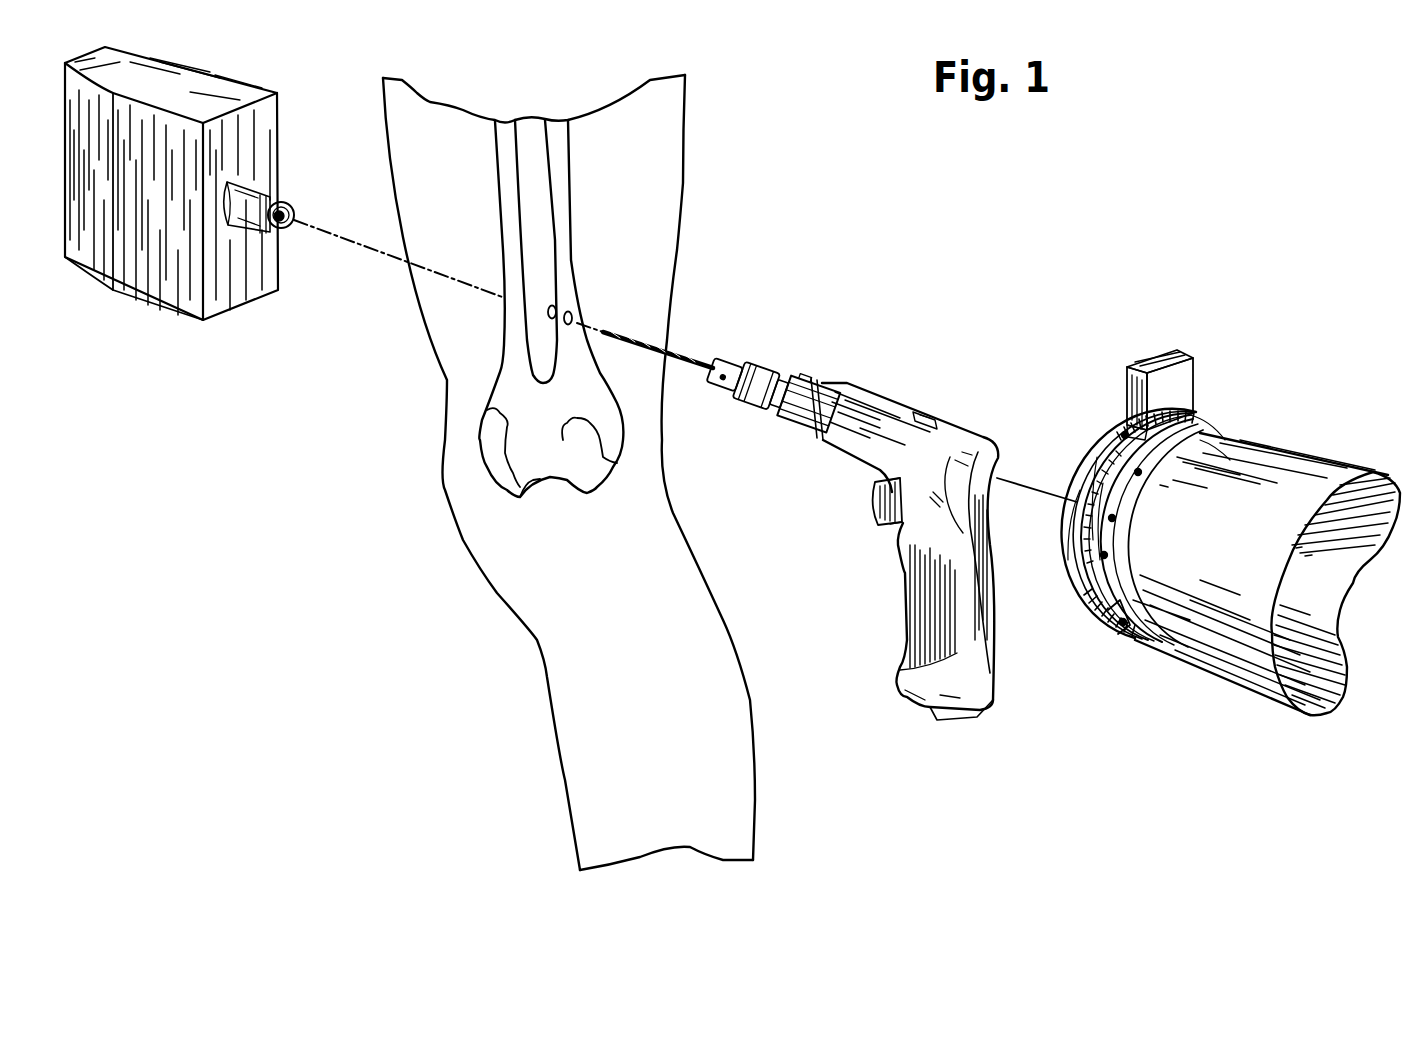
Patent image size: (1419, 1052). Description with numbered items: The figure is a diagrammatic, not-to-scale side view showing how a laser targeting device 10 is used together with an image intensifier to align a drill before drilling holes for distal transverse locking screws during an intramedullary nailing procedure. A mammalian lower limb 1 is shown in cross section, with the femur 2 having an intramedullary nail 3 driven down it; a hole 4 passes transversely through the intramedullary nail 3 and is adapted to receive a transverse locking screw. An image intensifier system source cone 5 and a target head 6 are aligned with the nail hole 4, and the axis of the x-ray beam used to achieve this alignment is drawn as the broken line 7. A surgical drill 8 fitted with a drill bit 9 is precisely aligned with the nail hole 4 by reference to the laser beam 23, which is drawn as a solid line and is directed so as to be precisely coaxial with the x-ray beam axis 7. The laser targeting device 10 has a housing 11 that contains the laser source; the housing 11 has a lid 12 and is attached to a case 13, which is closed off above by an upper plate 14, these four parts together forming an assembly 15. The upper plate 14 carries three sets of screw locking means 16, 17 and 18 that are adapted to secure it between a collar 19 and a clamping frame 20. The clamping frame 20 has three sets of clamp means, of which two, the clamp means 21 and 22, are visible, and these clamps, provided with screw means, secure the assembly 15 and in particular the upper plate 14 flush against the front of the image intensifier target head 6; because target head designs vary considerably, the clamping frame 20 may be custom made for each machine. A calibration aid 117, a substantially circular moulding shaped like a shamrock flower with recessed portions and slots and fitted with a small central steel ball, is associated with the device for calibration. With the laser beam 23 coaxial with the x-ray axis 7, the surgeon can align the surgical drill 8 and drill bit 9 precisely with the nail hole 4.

The mammalian lower limb 1 is at (658, 168).
The femur 2 is at (498, 178).
The intramedullary nail 3 is at (543, 220).
The hole 4 is at (547, 310).
The image intensifier system source cone 5 is at (250, 232).
The calibration aid 117 is at (295, 217).
The x-ray beam axis 7 is at (397, 259).
The surgical drill 8 is at (833, 450).
The drill bit 9 is at (672, 350).
The target head 6 is at (1207, 660).
The laser targeting device 10 is at (1083, 607).
The housing 11 is at (1177, 350).
The lid 12 is at (1187, 390).
The case 13 is at (1073, 587).
The upper plate 14 is at (1130, 413).
The assembly 15 is at (1092, 613).
The screw locking means 16 is at (1207, 413).
The screw locking means 17 is at (1103, 483).
The screw locking means 18 is at (1117, 623).
The collar 19 is at (1097, 457).
The clamping frame 20 is at (1213, 440).
The clamp means 21 is at (1123, 435).
The clamp means 22 is at (1110, 640).
The laser beam 23 is at (1020, 487).